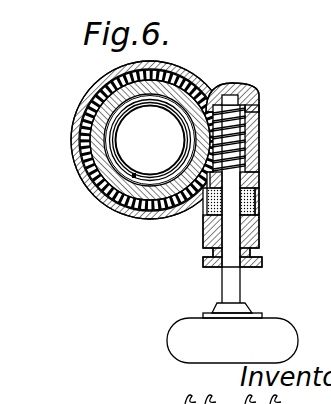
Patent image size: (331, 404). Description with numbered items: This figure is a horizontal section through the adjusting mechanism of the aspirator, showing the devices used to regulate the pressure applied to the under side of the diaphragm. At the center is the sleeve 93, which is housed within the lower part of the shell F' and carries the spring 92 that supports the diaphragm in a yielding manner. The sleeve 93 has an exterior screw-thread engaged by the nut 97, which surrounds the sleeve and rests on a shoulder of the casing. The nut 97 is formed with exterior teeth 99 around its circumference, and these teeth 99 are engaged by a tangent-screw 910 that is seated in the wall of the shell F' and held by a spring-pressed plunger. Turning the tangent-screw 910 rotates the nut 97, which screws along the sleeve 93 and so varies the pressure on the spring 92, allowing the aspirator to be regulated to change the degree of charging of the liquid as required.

The shell F' is at (136, 140).
The nut 97 is at (158, 218).
The spring 92 is at (90, 178).
The sleeve 93 is at (103, 155).
The exterior teeth 99 is at (202, 96).
The tangent-screw 910 is at (259, 143).